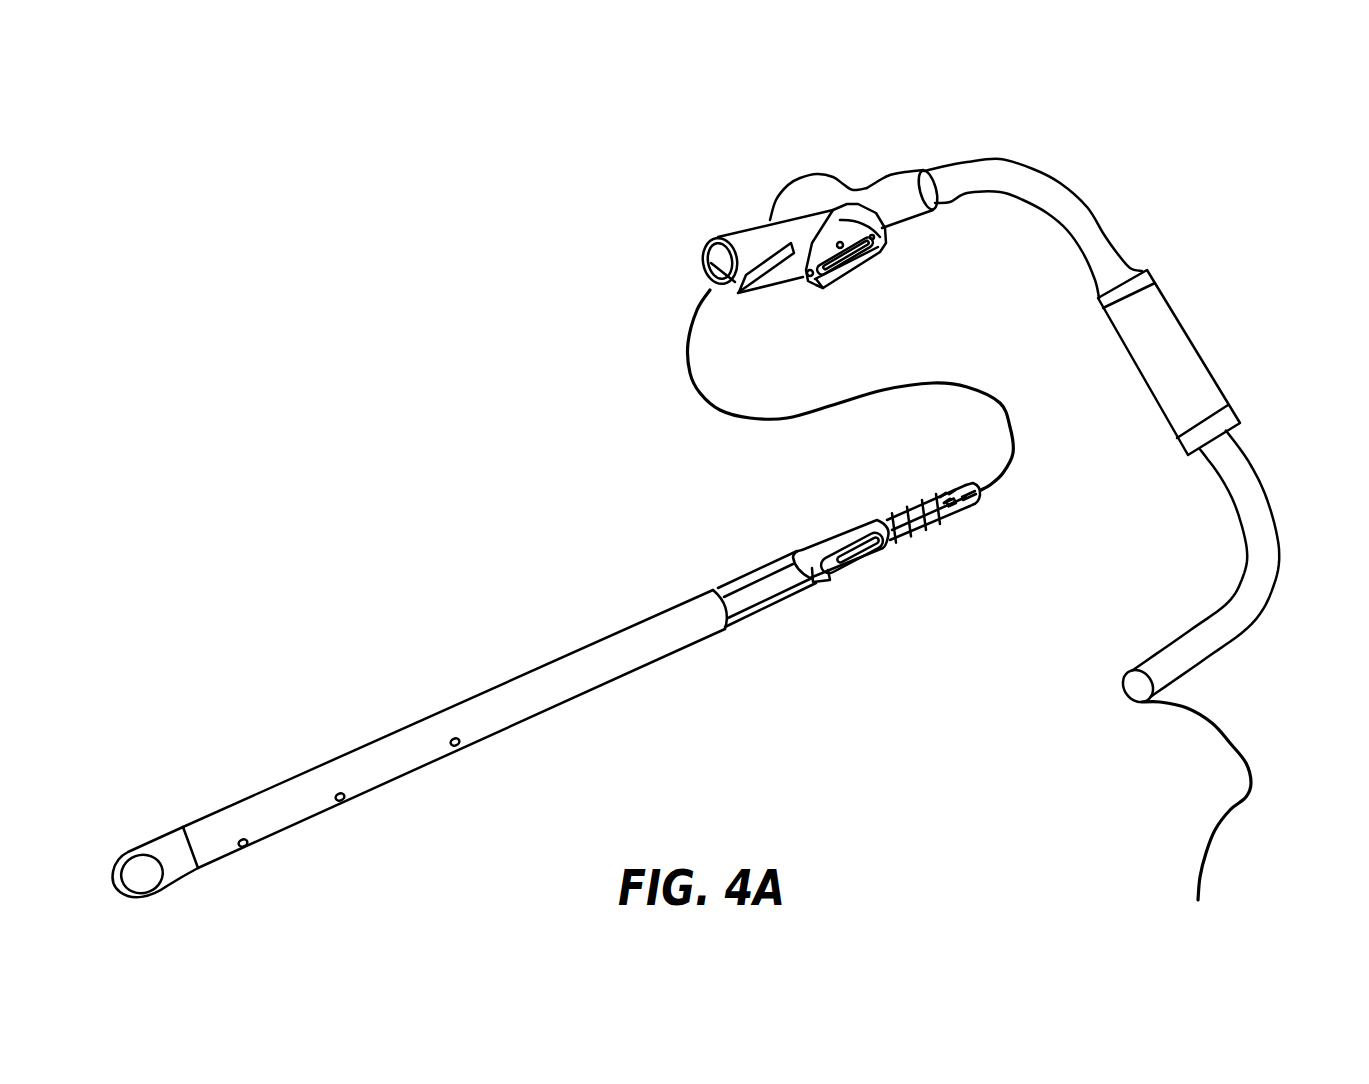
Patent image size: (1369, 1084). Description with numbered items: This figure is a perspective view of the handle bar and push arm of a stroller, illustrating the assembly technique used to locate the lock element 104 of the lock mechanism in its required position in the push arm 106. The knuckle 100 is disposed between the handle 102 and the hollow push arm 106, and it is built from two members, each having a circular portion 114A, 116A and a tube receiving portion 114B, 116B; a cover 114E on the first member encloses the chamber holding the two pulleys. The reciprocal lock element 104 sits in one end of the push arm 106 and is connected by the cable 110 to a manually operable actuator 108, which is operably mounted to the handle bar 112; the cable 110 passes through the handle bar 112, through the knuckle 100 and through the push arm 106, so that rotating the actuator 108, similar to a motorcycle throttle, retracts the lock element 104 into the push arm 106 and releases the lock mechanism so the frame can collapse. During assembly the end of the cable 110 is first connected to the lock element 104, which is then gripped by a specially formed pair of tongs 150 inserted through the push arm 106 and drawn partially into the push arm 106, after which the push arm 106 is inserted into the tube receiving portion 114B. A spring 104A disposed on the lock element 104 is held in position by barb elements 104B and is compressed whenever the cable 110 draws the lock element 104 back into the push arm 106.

The knuckle 100 is at (750, 175).
The handle 102 is at (1100, 405).
The lock element 104 is at (833, 548).
The spring 104A is at (913, 525).
The barb elements 104B is at (939, 492).
The push arm 106 is at (352, 758).
The manually operable actuator 108 is at (1188, 353).
The cable 110 is at (700, 382).
The handle bar 112 is at (1063, 208).
The circular portion 114A is at (873, 250).
The tube receiving portion 114B is at (735, 238).
The cover 114E is at (808, 280).
The circular portion 116A is at (813, 190).
The tube receiving portion 116B is at (920, 215).
The tongs 150 is at (155, 843).